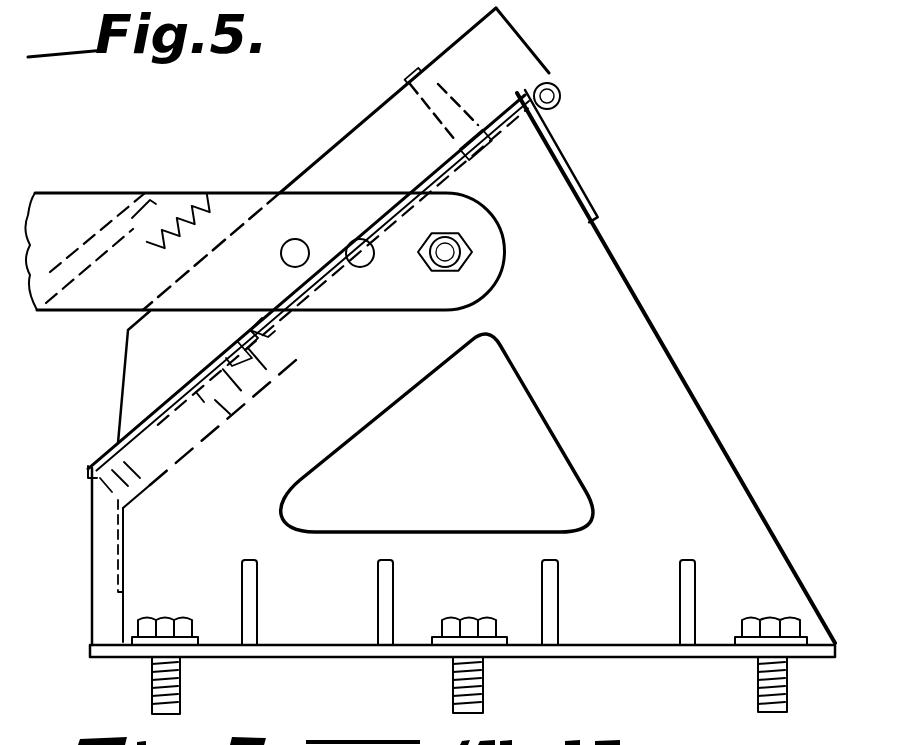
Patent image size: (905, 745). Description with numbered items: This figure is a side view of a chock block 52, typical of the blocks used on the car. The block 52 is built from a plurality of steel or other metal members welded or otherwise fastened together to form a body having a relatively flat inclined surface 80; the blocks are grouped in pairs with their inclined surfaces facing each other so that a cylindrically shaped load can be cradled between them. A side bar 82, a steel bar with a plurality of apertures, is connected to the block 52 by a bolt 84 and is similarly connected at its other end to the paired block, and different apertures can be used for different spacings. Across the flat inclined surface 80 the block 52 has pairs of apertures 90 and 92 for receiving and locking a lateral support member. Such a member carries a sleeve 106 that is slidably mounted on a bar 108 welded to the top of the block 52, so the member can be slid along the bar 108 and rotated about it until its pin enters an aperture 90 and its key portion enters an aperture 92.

The chock block 52 is at (684, 339).
The flat inclined surface 80 is at (116, 441).
The side bar 82 is at (222, 205).
The bolt 84 is at (453, 257).
The aperture 90 is at (478, 150).
The aperture 92 is at (250, 340).
The sleeve 106 is at (563, 88).
The bar 108 is at (557, 104).